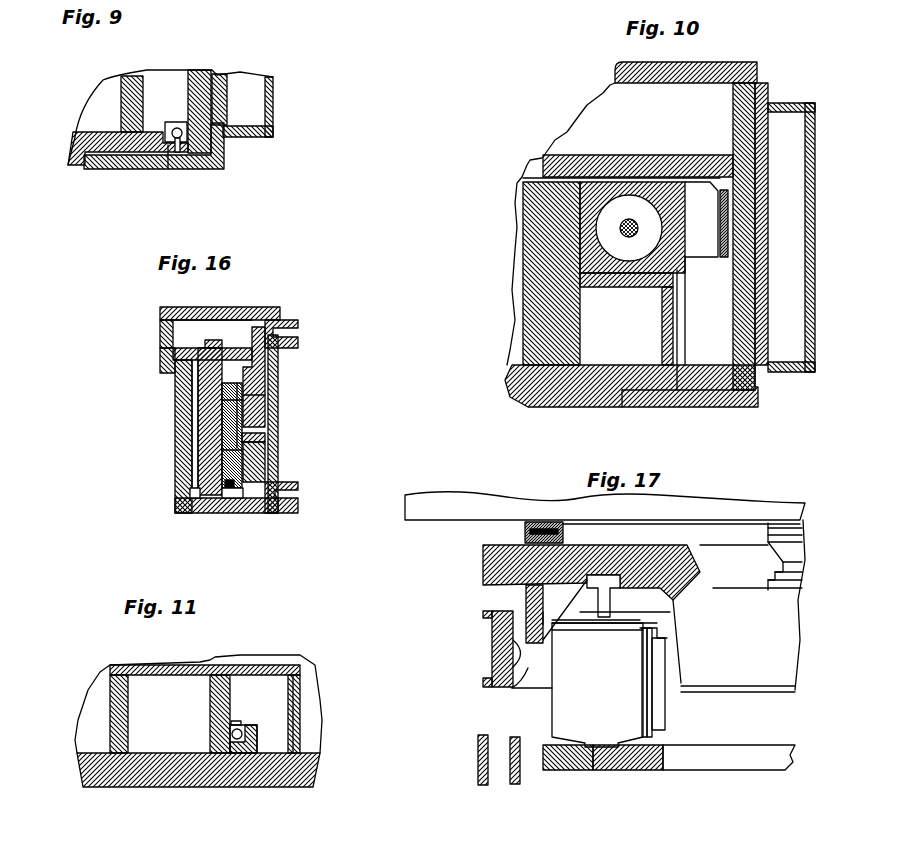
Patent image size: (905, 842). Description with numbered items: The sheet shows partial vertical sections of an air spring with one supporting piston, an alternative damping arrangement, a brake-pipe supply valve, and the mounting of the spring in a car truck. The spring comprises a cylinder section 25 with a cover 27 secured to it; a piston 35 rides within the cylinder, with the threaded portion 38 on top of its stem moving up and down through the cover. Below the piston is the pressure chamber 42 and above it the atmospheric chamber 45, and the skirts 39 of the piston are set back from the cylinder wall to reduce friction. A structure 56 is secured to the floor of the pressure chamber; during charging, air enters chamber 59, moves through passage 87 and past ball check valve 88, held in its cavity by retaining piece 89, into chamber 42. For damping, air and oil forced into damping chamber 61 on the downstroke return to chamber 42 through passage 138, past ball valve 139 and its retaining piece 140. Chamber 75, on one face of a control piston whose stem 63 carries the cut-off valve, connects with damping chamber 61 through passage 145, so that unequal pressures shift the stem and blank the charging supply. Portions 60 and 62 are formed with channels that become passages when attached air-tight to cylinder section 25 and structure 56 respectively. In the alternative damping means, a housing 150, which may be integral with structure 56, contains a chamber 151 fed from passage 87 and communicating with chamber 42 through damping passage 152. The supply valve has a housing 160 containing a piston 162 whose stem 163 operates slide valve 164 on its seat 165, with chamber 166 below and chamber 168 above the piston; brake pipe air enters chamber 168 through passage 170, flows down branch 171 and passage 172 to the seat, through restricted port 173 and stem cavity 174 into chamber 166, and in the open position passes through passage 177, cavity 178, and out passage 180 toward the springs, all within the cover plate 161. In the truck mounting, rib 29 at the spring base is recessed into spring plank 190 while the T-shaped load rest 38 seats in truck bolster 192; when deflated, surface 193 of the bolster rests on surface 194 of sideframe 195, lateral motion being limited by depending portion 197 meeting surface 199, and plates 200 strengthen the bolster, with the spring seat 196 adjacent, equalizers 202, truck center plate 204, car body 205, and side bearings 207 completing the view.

In FIG. 9, the cylinder section 25 is at (83, 137).
In FIG. 10, the cylinder section 25 is at (513, 372).
In FIG. 11, the cylinder section 25 is at (90, 772).
In FIG. 17, the cylinder section 25 is at (567, 707).
In FIG. 10, the cover 27 is at (618, 64).
In FIG. 17, the cover 27 is at (643, 628).
In FIG. 17, the rib 29 is at (592, 750).
In FIG. 10, the piston 35 is at (542, 162).
In FIG. 17, the portion / T-shaped load rest 38 is at (600, 583).
In FIG. 10, the skirts 39 is at (706, 226).
In FIG. 9, the pressure chamber 42 is at (160, 77).
In FIG. 10, the pressure chamber 42 is at (707, 357).
In FIG. 11, the pressure chamber 42 is at (313, 730).
In FIG. 10, the atmospheric chamber 45 is at (588, 115).
In FIG. 10, the structure 56 is at (537, 263).
In FIG. 11, the structure 56 is at (110, 713).
In FIG. 10, the chamber 59 is at (595, 357).
In FIG. 11, the chamber 59 is at (170, 742).
In FIG. 9, the portion 60 is at (273, 102).
In FIG. 10, the portion 60 is at (812, 193).
In FIG. 17, the portion 60 is at (658, 703).
In FIG. 9, the damping chamber 61 is at (240, 80).
In FIG. 10, the damping chamber 61 is at (793, 220).
In FIG. 10, the portion 62 is at (674, 198).
In FIG. 10, the stem 63 is at (638, 228).
In FIG. 10, the chamber 75 is at (647, 213).
In FIG. 11, the passage 87 is at (222, 753).
In FIG. 11, the ball check valve 88 is at (242, 740).
In FIG. 11, the retaining piece 89 is at (238, 722).
In FIG. 9, the passage 138 is at (224, 152).
In FIG. 9, the ball valve 139 is at (168, 147).
In FIG. 9, the retaining piece 140 is at (177, 122).
In FIG. 10, the passage 145 is at (758, 390).
In FIG. 11, the housing 150 is at (300, 668).
In FIG. 11, the chamber 151 is at (277, 697).
In FIG. 11, the damping passage 152 is at (297, 752).
In FIG. 16, the housing 160 is at (168, 331).
In FIG. 16, the cover plate 161 is at (233, 309).
In FIG. 16, the piston 162 is at (170, 352).
In FIG. 16, the stem 163 is at (208, 425).
In FIG. 16, the slide valve 164 is at (227, 483).
In FIG. 16, the seat 165 is at (253, 480).
In FIG. 16, the chamber 166 is at (195, 382).
In FIG. 16, the chamber 168 is at (188, 328).
In FIG. 16, the passage 170 is at (293, 328).
In FIG. 16, the branch 171 is at (263, 378).
In FIG. 16, the passage 172 is at (247, 398).
In FIG. 16, the restricted port 173 is at (233, 402).
In FIG. 16, the stem cavity 174 is at (223, 393).
In FIG. 16, the passage 177 is at (252, 438).
In FIG. 16, the cavity 178 is at (233, 447).
In FIG. 16, the passage 180 is at (262, 480).
In FIG. 17, the spring plank 190 is at (658, 760).
In FIG. 17, the truck bolster 192 is at (718, 597).
In FIG. 17, the surface 193 is at (498, 585).
In FIG. 17, the surface 194 is at (482, 607).
In FIG. 17, the sideframe 195 is at (500, 653).
In FIG. 17, the spring 196 is at (527, 670).
In FIG. 17, the depending portion 197 is at (533, 615).
In FIG. 17, the surface 199 is at (490, 673).
In FIG. 17, the plates 200 is at (560, 595).
In FIG. 17, the equalizers 202 is at (482, 760).
In FIG. 17, the truck center plate 204 is at (788, 582).
In FIG. 17, the car body 205 is at (478, 505).
In FIG. 17, the side bearings 207 is at (523, 535).